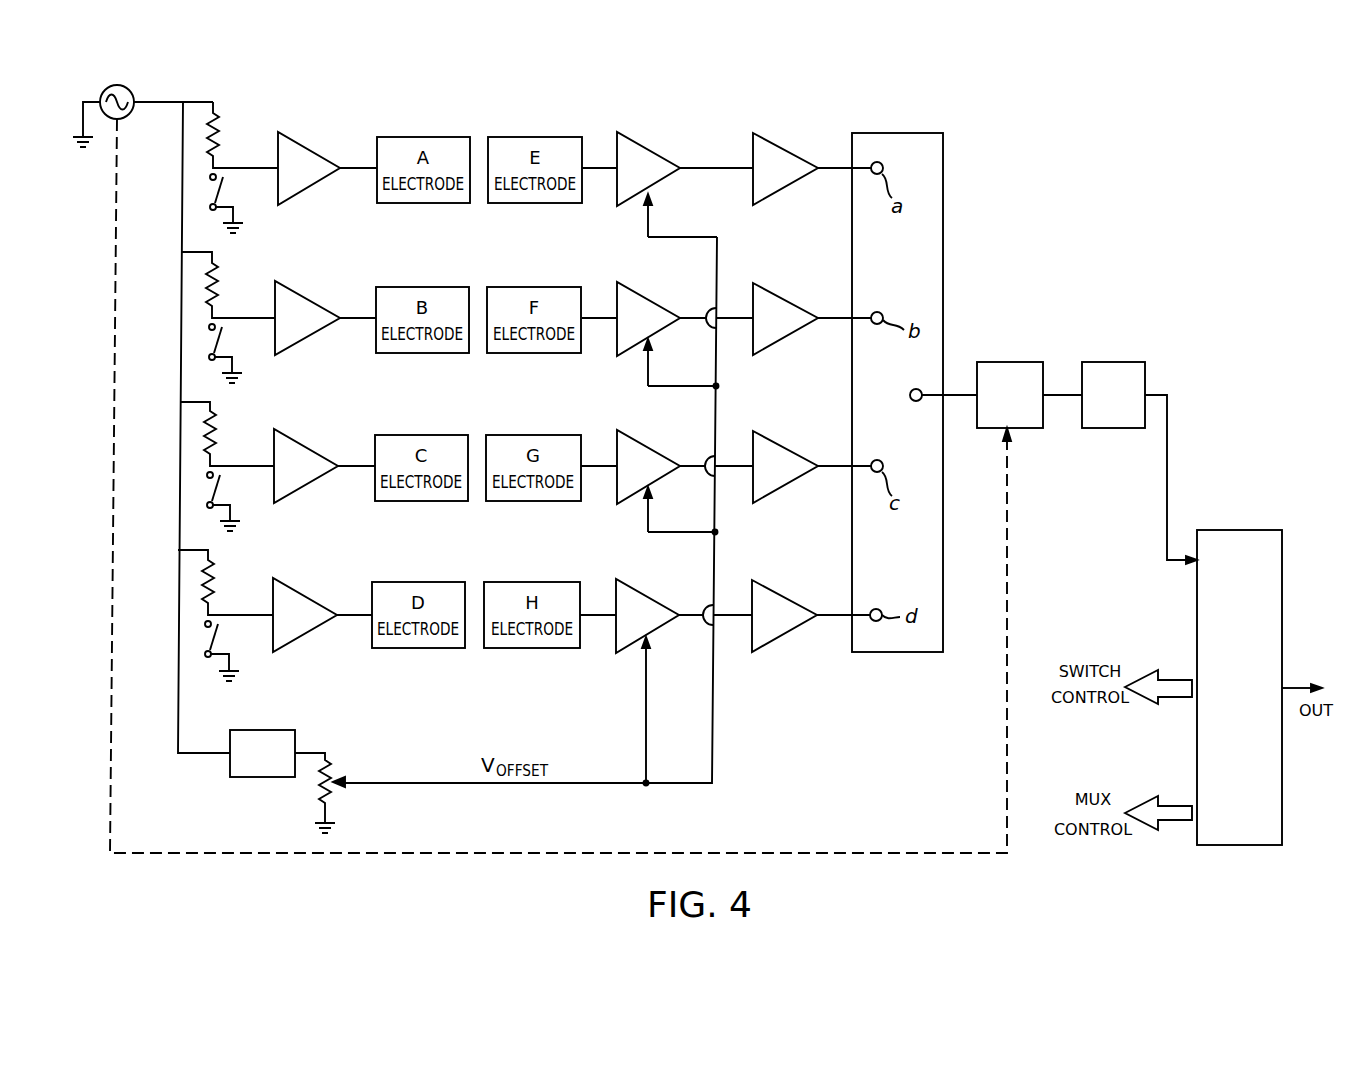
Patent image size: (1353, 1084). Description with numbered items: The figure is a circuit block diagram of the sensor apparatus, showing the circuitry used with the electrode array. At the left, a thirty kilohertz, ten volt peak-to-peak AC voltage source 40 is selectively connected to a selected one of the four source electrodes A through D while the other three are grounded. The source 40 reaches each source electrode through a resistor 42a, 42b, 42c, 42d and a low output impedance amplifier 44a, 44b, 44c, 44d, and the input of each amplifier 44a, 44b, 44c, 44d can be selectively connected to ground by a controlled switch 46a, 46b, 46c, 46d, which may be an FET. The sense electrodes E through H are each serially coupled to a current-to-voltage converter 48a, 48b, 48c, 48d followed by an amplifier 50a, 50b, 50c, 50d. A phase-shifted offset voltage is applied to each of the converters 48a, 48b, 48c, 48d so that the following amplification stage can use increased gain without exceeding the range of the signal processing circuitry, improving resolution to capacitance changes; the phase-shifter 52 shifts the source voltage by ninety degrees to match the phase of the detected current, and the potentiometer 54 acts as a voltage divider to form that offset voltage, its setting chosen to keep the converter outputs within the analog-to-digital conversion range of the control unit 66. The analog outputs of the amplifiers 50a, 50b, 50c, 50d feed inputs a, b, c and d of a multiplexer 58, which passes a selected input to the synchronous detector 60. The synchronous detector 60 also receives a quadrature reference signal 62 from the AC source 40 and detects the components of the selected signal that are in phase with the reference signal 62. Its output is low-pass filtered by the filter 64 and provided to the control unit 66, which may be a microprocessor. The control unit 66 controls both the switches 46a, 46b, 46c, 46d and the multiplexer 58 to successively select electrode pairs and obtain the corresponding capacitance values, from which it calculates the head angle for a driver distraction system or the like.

The AC voltage source 40 is at (135, 100).
The resistor 42a is at (223, 124).
The resistor 42b is at (222, 274).
The resistor 42c is at (220, 424).
The resistor 42d is at (218, 572).
The low output impedance amplifier 44a is at (313, 188).
The low output impedance amplifier 44b is at (311, 338).
The low output impedance amplifier 44c is at (310, 486).
The low output impedance amplifier 44d is at (309, 635).
The controlled switch 46a is at (207, 189).
The controlled switch 46b is at (206, 339).
The controlled switch 46c is at (204, 487).
The controlled switch 46d is at (202, 637).
The current-to-voltage converter 48a is at (644, 155).
The current-to-voltage converter 48b is at (644, 305).
The current-to-voltage converter 48c is at (644, 453).
The current-to-voltage converter 48d is at (643, 602).
The amplifier 50a is at (787, 145).
The amplifier 50b is at (787, 297).
The amplifier 50c is at (787, 445).
The amplifier 50d is at (786, 594).
The phase-shifter 52 is at (230, 771).
The potentiometer 54 is at (320, 798).
The multiplexer 58 is at (893, 652).
The synchronous detector 60 is at (1010, 362).
The quadrature reference signal 62 is at (870, 852).
The low-pass filter 64 is at (1110, 362).
The control unit 66 is at (1240, 530).